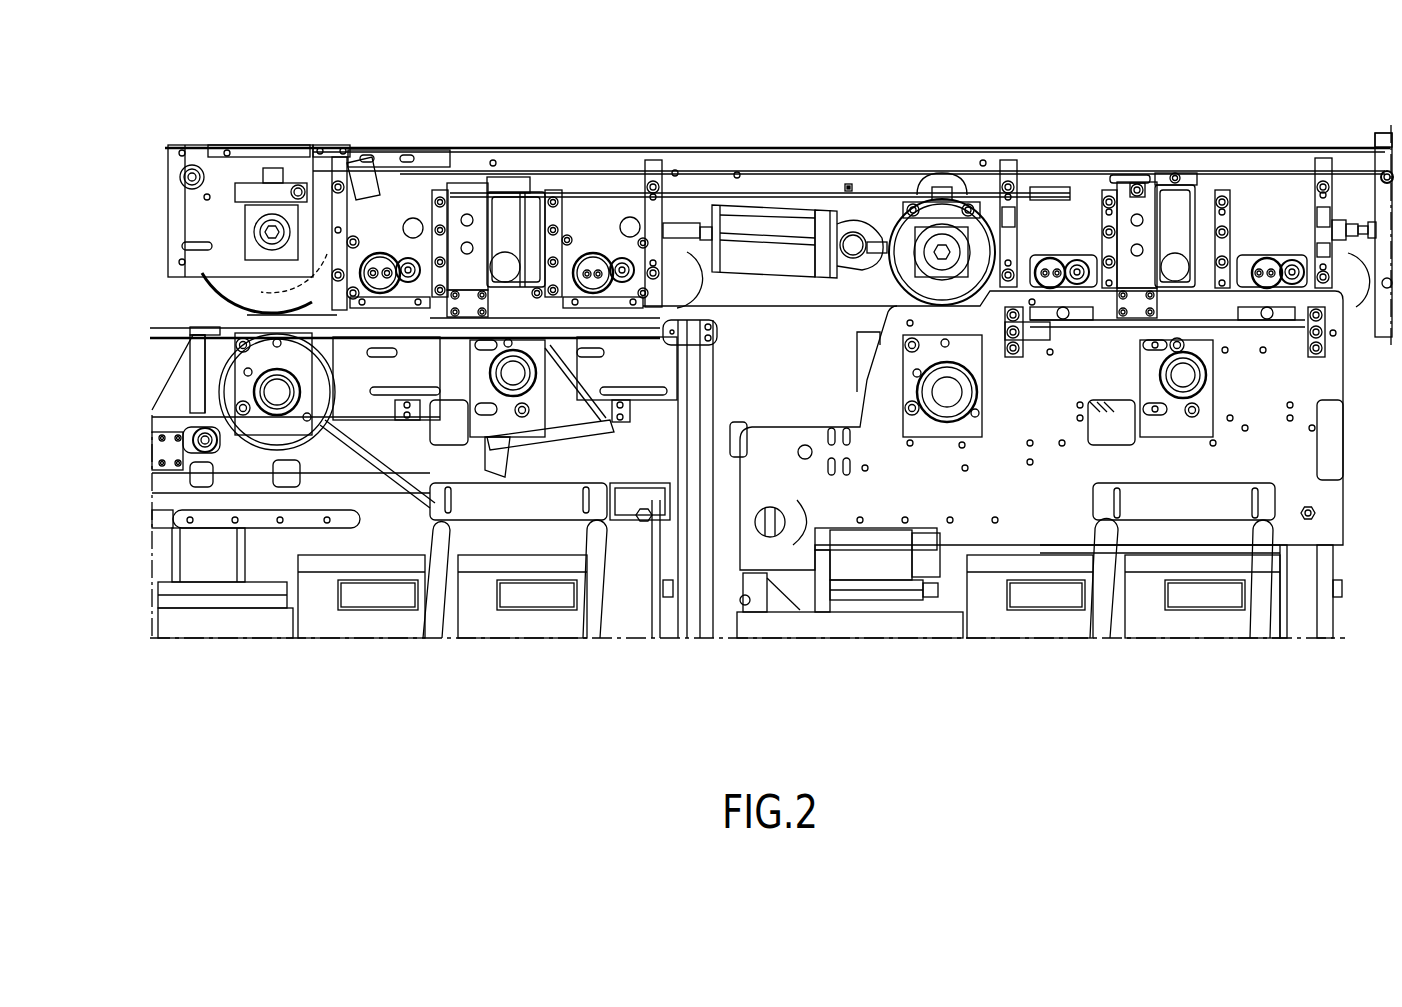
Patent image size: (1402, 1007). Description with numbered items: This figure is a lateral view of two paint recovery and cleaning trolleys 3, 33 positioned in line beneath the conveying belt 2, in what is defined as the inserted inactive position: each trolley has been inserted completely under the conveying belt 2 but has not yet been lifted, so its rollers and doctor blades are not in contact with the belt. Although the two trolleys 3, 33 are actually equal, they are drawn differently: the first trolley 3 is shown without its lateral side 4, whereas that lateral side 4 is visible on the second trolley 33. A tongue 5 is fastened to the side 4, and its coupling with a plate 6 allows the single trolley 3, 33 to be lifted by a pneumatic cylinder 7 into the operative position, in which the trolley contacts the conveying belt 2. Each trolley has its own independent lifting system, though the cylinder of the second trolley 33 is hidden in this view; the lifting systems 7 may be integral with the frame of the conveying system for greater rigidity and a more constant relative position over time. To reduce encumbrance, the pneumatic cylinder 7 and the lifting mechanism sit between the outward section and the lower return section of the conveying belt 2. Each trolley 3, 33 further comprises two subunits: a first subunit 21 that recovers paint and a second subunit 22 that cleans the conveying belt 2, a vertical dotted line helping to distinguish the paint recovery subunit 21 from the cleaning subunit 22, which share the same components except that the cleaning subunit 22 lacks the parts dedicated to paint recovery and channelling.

The conveying belt 2 is at (362, 150).
The tongue 5 is at (380, 303).
The second subunit 22 is at (526, 315).
The pneumatic cylinder 7 is at (777, 210).
The plate 6 is at (1047, 228).
The first subunit 21 is at (232, 318).
The first trolley 3 is at (388, 668).
The lateral side 4 is at (795, 492).
The second trolley 33 is at (900, 653).